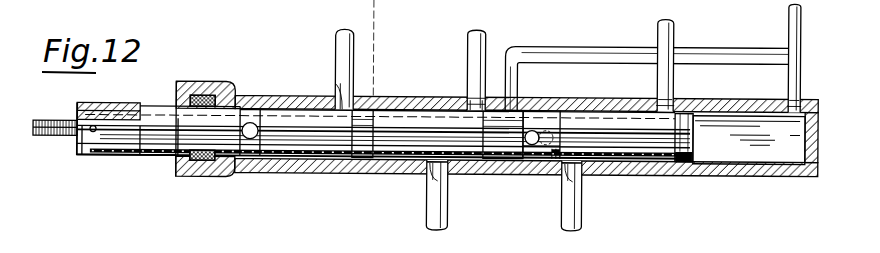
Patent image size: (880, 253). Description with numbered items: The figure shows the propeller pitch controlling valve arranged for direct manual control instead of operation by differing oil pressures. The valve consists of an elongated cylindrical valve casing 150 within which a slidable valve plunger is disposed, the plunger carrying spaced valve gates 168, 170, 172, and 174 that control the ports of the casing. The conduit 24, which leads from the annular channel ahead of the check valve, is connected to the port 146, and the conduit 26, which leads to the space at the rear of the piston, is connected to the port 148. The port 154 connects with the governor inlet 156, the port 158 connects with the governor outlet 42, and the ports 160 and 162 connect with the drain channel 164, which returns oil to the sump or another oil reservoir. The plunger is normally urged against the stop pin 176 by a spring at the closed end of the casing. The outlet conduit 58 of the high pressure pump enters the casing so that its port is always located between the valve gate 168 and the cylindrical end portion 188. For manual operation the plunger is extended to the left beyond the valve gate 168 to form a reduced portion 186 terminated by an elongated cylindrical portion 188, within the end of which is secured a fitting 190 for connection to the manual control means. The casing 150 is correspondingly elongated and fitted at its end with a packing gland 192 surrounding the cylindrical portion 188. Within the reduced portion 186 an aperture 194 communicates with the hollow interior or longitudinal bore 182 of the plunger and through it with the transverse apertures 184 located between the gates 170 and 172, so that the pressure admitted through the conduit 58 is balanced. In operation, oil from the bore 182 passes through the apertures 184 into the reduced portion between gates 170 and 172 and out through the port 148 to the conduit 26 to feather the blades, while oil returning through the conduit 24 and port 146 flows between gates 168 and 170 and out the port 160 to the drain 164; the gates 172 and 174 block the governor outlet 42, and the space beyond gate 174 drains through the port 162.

The conduit 24 is at (427, 213).
The conduit 26 is at (582, 215).
The governor outlet 42 is at (675, 44).
The outlet conduit of the high pressure pump 58 is at (336, 53).
The port 146 is at (438, 168).
The port 148 is at (583, 177).
The cylindrical valve casing 150 is at (298, 175).
The port 154 is at (468, 96).
The governor inlet 156 is at (467, 52).
The port 158 is at (672, 104).
The port 160 is at (525, 110).
The port 162 is at (798, 107).
The drain channel 164 is at (789, 32).
The valve gate 168 is at (368, 160).
The valve gate 170 is at (508, 148).
The valve gate 172 is at (555, 160).
The valve gate 174 is at (690, 165).
The stop pin 176 is at (372, 97).
The longitudinal bore 182 is at (428, 112).
The transverse apertures 184 is at (540, 131).
The reduced portion 186 is at (324, 157).
The elongated cylindrical portion 188 is at (153, 108).
The fitting 190 is at (62, 110).
The packing gland 192 is at (208, 98).
The aperture 194 is at (252, 100).